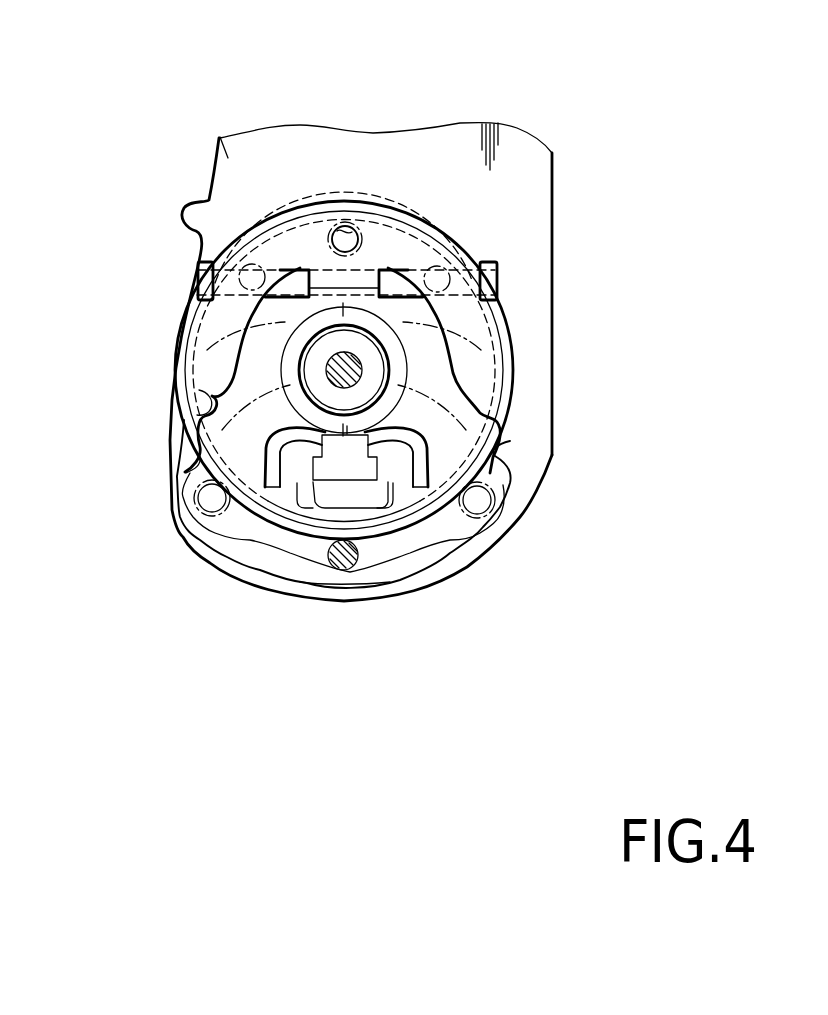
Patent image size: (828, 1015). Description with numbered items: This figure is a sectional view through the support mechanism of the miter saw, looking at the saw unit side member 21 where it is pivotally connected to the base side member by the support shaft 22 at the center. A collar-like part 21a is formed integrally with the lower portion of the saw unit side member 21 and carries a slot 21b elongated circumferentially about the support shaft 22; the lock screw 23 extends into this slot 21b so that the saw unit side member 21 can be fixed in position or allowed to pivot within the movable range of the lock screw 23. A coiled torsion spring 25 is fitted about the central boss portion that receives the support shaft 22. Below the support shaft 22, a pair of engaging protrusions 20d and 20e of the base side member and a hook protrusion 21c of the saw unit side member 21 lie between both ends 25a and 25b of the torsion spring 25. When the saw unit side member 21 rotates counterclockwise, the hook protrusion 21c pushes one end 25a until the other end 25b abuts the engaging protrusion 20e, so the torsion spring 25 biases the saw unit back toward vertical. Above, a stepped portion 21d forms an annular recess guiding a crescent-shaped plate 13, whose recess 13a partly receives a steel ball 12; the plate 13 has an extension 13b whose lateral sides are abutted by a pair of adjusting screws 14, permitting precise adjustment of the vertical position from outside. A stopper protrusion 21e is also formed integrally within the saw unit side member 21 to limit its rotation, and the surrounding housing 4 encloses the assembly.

The housing 4 is at (220, 137).
The ball 12 is at (355, 226).
The plate 13 is at (293, 247).
The recess 13a is at (348, 229).
The extension 13b is at (300, 262).
The adjusting screws 14 is at (193, 268).
The engaging protrusion 20d is at (357, 473).
The engaging protrusion 20e is at (307, 510).
The saw unit side member 21 is at (443, 230).
The collar-like part 21a is at (483, 552).
The slot 21b is at (260, 548).
The hook protrusion 21c is at (207, 393).
The stepped portion 21d is at (197, 392).
The stopper protrusion 21e is at (290, 395).
The support shaft 22 is at (348, 367).
The lock screw 23 is at (345, 570).
The coiled torsion spring 25 is at (395, 347).
The one end of the torsion spring 25a is at (429, 473).
The other end of the torsion spring 25b is at (280, 387).